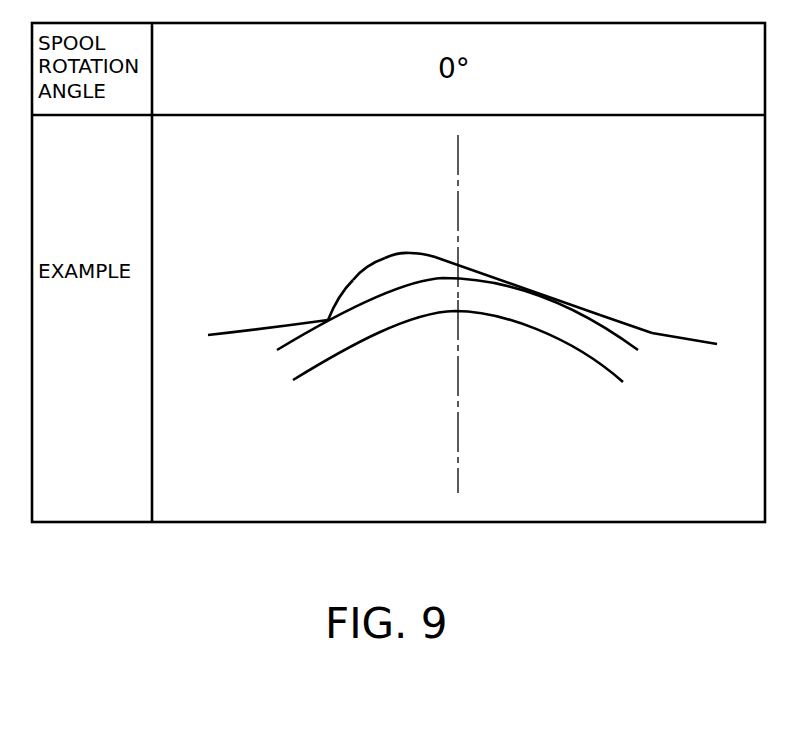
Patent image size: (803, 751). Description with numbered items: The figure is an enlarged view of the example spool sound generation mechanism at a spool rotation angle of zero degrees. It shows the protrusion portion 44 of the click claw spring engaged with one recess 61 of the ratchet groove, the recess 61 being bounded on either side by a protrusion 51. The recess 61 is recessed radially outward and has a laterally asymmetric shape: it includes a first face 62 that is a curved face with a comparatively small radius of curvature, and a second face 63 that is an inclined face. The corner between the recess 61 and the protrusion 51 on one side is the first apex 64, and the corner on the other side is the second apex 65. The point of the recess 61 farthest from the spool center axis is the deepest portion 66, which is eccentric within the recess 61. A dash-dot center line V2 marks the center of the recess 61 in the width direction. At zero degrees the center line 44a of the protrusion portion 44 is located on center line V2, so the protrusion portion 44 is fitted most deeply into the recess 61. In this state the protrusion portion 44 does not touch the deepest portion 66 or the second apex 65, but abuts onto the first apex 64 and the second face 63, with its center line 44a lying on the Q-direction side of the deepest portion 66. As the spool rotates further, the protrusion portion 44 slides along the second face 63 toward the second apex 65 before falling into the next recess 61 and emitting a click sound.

The protrusion portion 44 is at (547, 318).
The center line of the protrusion portion 44a is at (458, 402).
The protrusion 51 is at (245, 333).
The recess 61 is at (382, 258).
The first face 62 is at (367, 262).
The second face 63 is at (530, 289).
The first apex 64 is at (327, 318).
The second apex 65 is at (652, 333).
The deepest portion 66 is at (415, 254).
The center line V2 is at (458, 165).